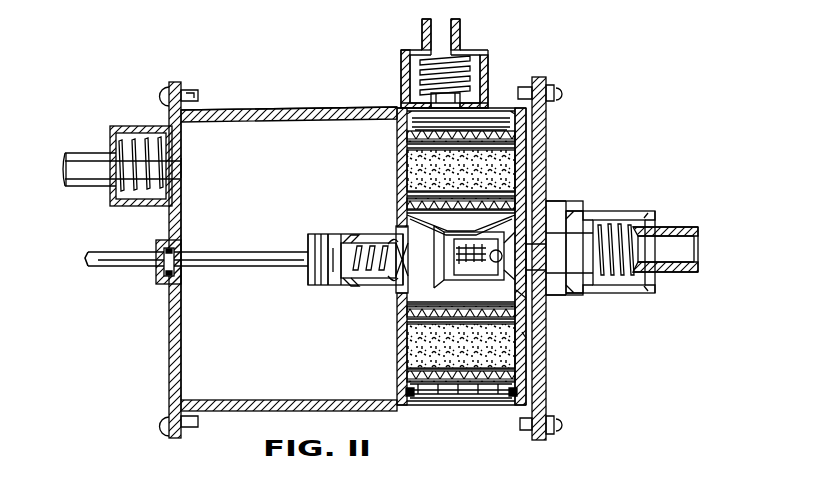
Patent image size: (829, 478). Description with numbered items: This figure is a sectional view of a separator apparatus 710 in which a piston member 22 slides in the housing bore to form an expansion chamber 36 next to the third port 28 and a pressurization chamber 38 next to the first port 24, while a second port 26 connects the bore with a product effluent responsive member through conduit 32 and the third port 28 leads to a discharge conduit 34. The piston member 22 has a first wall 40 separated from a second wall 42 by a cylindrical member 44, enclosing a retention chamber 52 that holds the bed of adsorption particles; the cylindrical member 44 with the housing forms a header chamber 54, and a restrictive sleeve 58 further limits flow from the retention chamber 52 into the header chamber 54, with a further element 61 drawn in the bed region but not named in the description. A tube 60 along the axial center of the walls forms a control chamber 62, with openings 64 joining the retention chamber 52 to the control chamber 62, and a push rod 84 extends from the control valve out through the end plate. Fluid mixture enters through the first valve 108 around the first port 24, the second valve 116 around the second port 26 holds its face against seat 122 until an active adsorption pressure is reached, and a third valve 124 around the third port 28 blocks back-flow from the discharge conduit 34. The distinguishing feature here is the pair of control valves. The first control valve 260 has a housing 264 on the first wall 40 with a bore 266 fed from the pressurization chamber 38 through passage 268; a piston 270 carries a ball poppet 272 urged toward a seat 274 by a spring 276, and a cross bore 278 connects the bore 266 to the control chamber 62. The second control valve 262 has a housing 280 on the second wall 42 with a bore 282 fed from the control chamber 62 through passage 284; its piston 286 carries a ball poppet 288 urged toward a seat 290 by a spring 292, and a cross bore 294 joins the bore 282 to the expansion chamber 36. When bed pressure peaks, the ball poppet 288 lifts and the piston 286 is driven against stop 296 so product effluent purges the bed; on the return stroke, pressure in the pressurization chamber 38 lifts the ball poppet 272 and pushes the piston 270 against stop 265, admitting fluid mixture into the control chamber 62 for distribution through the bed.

The piston member 22 is at (316, 122).
The first port 24 is at (558, 228).
The second port 26 is at (418, 94).
The third port 28 is at (174, 152).
The conduit 32 is at (414, 14).
The discharge conduit 34 is at (76, 176).
The expansion chamber 36 is at (239, 144).
The pressurization chamber 38 is at (558, 216).
The first wall 40 is at (524, 118).
The second wall 42 is at (388, 136).
The cylindrical member 44 is at (498, 390).
The retention chamber 52 is at (400, 370).
The header chamber 54 is at (442, 392).
The restrictive sleeve 58 is at (468, 384).
The tube 60 is at (428, 386).
The filter element 61 is at (406, 322).
The control chamber 62 is at (460, 290).
The openings 64 is at (536, 324).
The push rod 84 is at (103, 258).
The first valve 108 is at (652, 207).
The second valve 116 is at (461, 37).
The seat 122 is at (458, 86).
The third valve 124 is at (102, 128).
The first control valve 260 is at (411, 172).
The second control valve 262 is at (338, 276).
The housing 264 is at (518, 272).
The stop 265 is at (422, 340).
The bore 266 is at (524, 258).
The passage 268 is at (594, 278).
The piston 270 is at (464, 204).
The ball poppet 272 is at (526, 192).
The seat 274 is at (518, 262).
The spring 276 is at (448, 210).
The cross bore 278 is at (525, 158).
The housing 280 is at (342, 284).
The bore 282 is at (386, 278).
The passage 284 is at (402, 292).
The piston 286 is at (326, 278).
The ball poppet 288 is at (376, 222).
The seat 290 is at (398, 230).
The spring 292 is at (296, 218).
The cross bore 294 is at (316, 246).
The stop 296 is at (320, 260).
The separator apparatus 710 is at (82, 369).